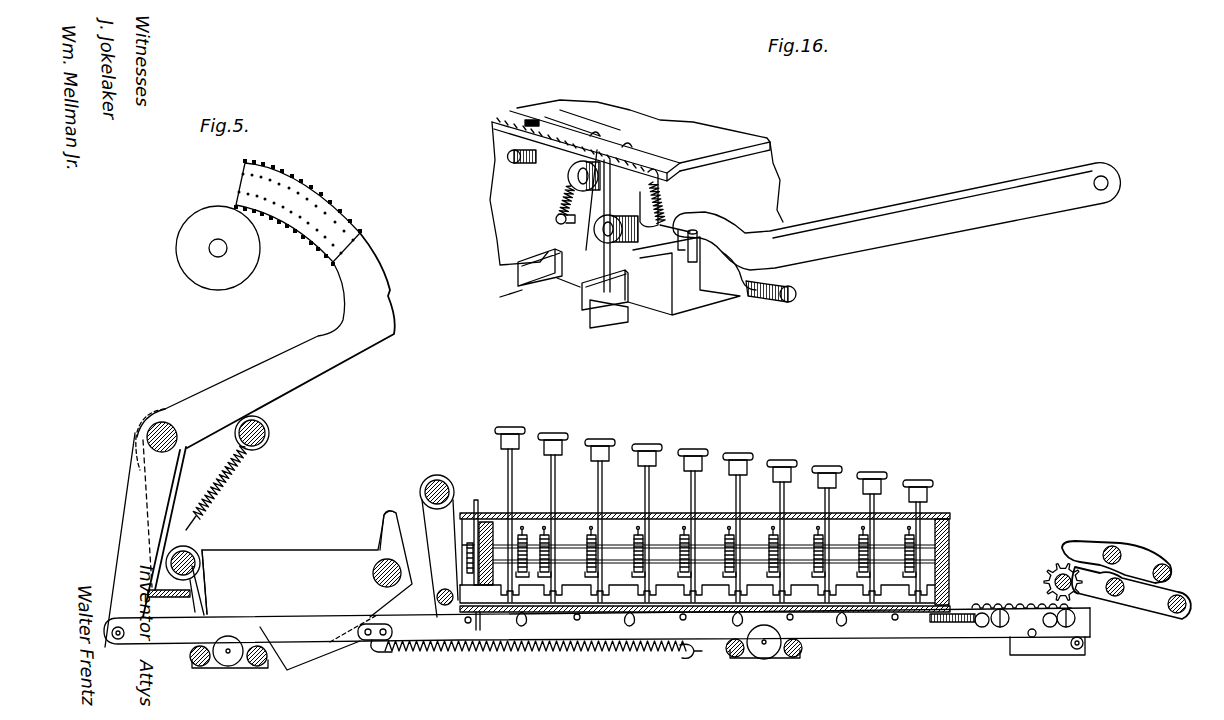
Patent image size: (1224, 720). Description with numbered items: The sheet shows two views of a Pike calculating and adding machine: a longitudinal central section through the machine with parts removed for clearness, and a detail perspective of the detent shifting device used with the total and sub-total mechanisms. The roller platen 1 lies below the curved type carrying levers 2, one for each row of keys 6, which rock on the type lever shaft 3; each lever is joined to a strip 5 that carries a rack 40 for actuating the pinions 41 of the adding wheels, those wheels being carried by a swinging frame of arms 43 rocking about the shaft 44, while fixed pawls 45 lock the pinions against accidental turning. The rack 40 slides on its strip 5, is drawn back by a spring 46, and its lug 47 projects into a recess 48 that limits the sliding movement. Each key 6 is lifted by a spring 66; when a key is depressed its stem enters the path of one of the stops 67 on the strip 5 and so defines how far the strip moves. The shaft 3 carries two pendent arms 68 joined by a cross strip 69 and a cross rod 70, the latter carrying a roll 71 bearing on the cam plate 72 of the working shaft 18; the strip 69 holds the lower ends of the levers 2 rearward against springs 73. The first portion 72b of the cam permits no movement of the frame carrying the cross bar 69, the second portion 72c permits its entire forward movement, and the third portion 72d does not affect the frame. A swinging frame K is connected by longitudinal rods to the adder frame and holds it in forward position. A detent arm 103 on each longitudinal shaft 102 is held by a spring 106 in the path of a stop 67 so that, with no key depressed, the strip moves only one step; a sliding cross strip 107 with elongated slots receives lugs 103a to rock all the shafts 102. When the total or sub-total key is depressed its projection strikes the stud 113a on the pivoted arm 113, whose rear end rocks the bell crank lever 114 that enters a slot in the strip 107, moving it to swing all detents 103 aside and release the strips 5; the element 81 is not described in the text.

In FIG. 5, the roller platen 1 is at (182, 262).
In FIG. 5, the type carrying lever 2 is at (112, 528).
In FIG. 5, the type lever shaft 3 is at (148, 432).
In FIG. 5, the strip 5 is at (330, 645).
In FIG. 16, the strip 5 is at (517, 282).
In FIG. 5, the key 6 is at (560, 438).
In FIG. 5, the working shaft 18 is at (383, 563).
In FIG. 5, the rack 40 is at (1008, 604).
In FIG. 5, the pinion 41 is at (1048, 574).
In FIG. 5, the arm 43 is at (1144, 610).
In FIG. 5, the shaft 44 is at (1182, 614).
In FIG. 5, the fixed pawl 45 is at (1128, 556).
In FIG. 5, the spring 46 is at (963, 626).
In FIG. 5, the lug 47 is at (1030, 640).
In FIG. 5, the recess 48 is at (1070, 650).
In FIG. 5, the spring 66 is at (589, 540).
In FIG. 5, the stop 67 is at (465, 625).
In FIG. 5, the pendent arm 68 is at (178, 478).
In FIG. 5, the cross strip 69 is at (150, 595).
In FIG. 5, the cross rod 70 is at (192, 556).
In FIG. 5, the roll 71 is at (201, 571).
In FIG. 5, the cam plate 72 is at (597, 606).
In FIG. 5, the first cam portion 72b is at (203, 600).
In FIG. 5, the second cam portion 72c is at (300, 633).
In FIG. 5, the third cam portion 72d is at (283, 672).
In FIG. 5, the spring 73 is at (557, 662).
In FIG. 5, the cam 81 is at (384, 512).
In FIG. 16, the longitudinal shaft 102 is at (508, 157).
In FIG. 5, the detent arm 103 is at (478, 512).
In FIG. 16, the detent arm 103 is at (593, 260).
In FIG. 16, the lug 103a is at (598, 140).
In FIG. 16, the spring 106 is at (558, 201).
In FIG. 16, the sliding cross strip 107 is at (655, 157).
In FIG. 16, the pivoted arm 113 is at (953, 188).
In FIG. 16, the stud 113a is at (800, 293).
In FIG. 16, the bell crank lever 114 is at (686, 265).
In FIG. 5, the swinging frame K is at (450, 492).